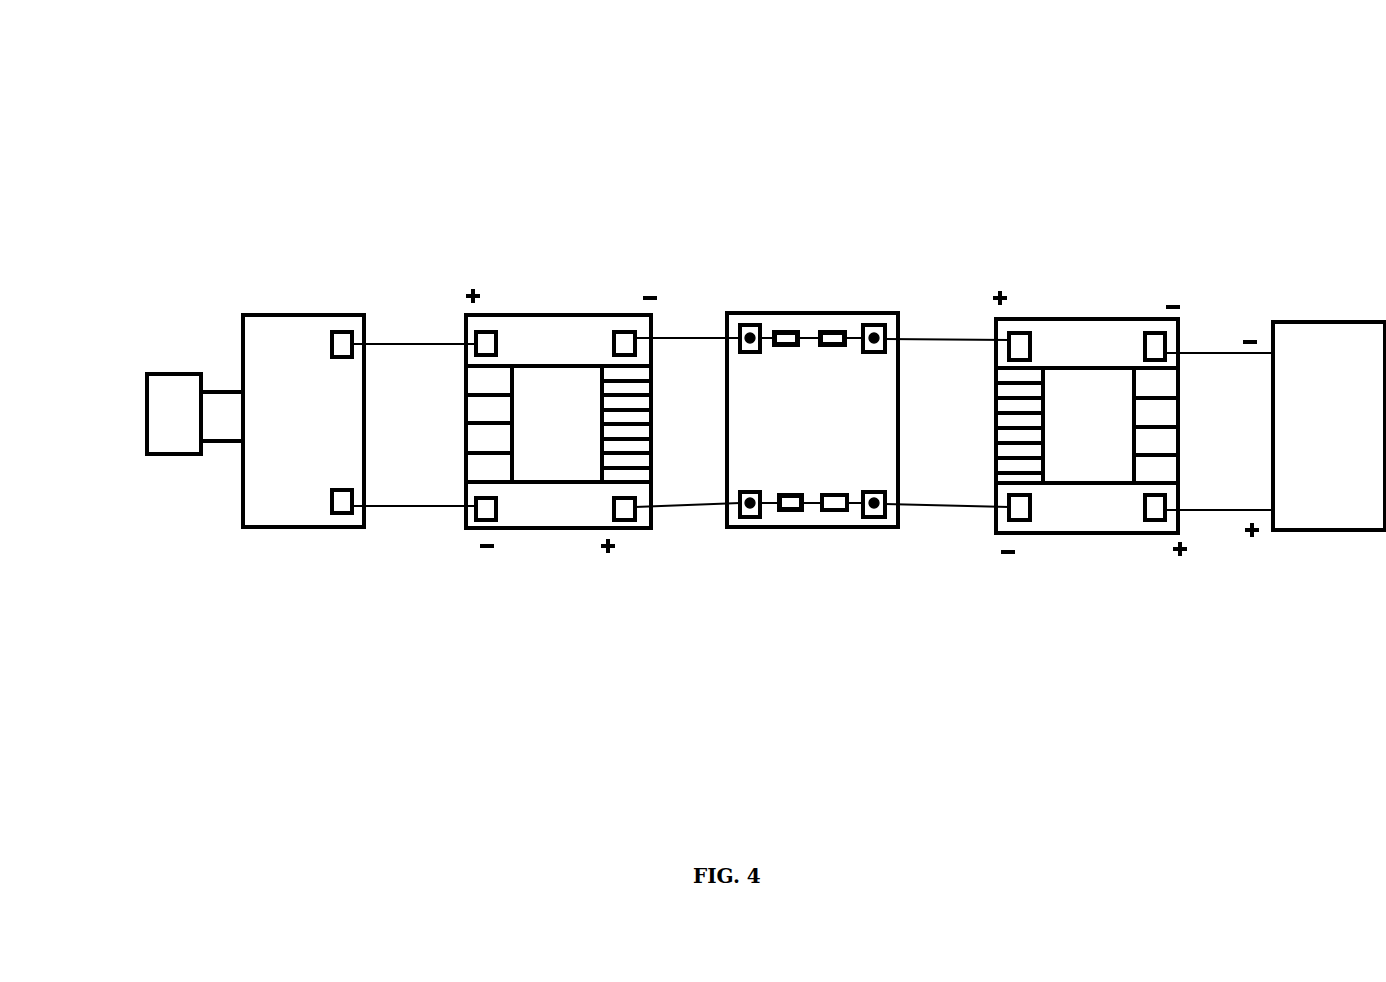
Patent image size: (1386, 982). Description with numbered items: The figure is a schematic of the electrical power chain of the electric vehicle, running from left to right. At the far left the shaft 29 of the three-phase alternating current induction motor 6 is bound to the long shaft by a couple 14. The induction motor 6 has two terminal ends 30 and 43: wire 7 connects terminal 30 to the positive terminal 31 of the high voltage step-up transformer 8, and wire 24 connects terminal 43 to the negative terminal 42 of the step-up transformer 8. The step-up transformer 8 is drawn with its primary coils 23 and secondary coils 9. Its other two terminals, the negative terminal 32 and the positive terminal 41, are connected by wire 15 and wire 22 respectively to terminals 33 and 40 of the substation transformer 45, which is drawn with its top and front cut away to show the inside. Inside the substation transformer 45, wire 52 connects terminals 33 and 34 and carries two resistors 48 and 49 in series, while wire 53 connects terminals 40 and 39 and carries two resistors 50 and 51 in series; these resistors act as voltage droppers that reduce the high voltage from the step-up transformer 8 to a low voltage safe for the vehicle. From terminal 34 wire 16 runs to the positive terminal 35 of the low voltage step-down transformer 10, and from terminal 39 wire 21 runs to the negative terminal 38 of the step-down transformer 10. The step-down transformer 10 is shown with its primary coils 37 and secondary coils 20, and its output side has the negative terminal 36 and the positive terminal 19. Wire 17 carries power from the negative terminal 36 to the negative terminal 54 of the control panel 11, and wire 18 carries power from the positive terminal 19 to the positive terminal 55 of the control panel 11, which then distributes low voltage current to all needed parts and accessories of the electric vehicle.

The 3-phase alternating current induction motor 6 is at (264, 315).
The wire 7 is at (417, 340).
The high voltage step-up transformer 8 is at (543, 327).
The secondary coils of the high voltage step-up transformer 9 is at (651, 434).
The low voltage step-down transformer 10 is at (1102, 319).
The control panel 11 is at (1323, 322).
The couple 14 is at (167, 374).
The wire 15 is at (688, 335).
The wire 16 is at (943, 336).
The wire 17 is at (1208, 351).
The wire 18 is at (1210, 510).
The positive terminal of the low voltage step-down transformer 19 is at (1165, 520).
The secondary coils of the low voltage step-down transformer 20 is at (1043, 447).
The wire 21 is at (948, 507).
The wire 22 is at (707, 503).
The primary coils of the high voltage step-up transformer 23 is at (476, 412).
The wire 24 is at (398, 508).
The shaft of the 3-phase alternating current induction motor 29 is at (228, 441).
The terminal of the 3-phase alternating current induction motor 30 is at (342, 332).
The positive terminal of the high voltage step-up transformer 31 is at (488, 335).
The negative terminal of the high voltage step-up transformer 32 is at (628, 335).
The terminal of the substation transformer 33 is at (752, 325).
The terminal of the substation transformer 34 is at (871, 325).
The positive terminal of the low voltage step-down transformer 35 is at (1017, 333).
The negative terminal of the low voltage step-down transformer 36 is at (1147, 335).
The primary coils of the low voltage step-down transformer 37 is at (1134, 447).
The negative terminal of the low voltage step-down transformer 38 is at (1028, 520).
The terminal of the substation transformer 39 is at (875, 517).
The terminal of the substation transformer 40 is at (755, 517).
The positive terminal of the high voltage step-up transformer 41 is at (625, 520).
The negative terminal of the high voltage step-up transformer 42 is at (495, 507).
The terminal of the 3-phase alternating current induction motor 43 is at (336, 513).
The substation transformer 45 is at (823, 332).
The resistor 48 is at (838, 332).
The resistor 49 is at (787, 332).
The resistor 50 is at (782, 510).
The resistor 51 is at (837, 510).
The wire 52 is at (804, 332).
The wire 53 is at (812, 510).
The negative terminal of the control panel 54 is at (1247, 332).
The positive terminal of the control panel 55 is at (1252, 550).